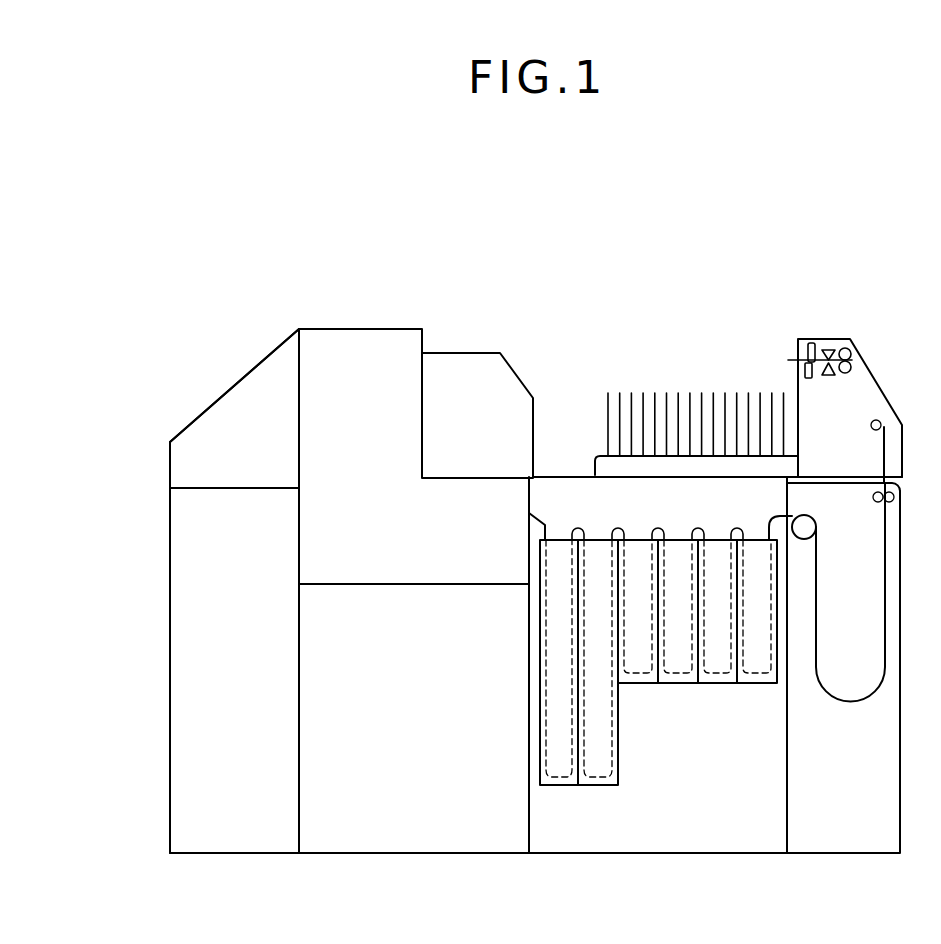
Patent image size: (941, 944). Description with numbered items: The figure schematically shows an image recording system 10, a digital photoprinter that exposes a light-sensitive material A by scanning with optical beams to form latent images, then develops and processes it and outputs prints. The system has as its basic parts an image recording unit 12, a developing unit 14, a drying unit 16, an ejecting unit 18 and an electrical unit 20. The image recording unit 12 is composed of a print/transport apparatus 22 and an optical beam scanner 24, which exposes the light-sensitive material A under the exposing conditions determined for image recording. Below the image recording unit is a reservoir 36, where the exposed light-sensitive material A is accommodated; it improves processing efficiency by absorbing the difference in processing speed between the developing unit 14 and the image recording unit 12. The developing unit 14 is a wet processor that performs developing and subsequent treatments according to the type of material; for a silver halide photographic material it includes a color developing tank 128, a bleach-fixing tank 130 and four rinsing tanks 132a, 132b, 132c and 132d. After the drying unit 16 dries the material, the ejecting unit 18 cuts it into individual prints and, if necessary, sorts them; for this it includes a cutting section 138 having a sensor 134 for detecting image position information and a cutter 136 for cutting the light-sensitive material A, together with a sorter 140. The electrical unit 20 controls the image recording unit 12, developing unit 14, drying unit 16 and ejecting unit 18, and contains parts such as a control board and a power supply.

The image recording system 10 is at (562, 270).
The image recording unit 12 is at (185, 323).
The developing unit 14 is at (757, 832).
The drying unit 16 is at (857, 822).
The ejecting unit 18 is at (730, 288).
The electrical unit 20 is at (176, 619).
The print/transport apparatus 22 is at (357, 342).
The optical beam scanner 24 is at (198, 430).
The reservoir 36 is at (427, 716).
The color developing tank 128 is at (563, 786).
The bleach-fixing tank 130 is at (618, 780).
The rinsing tank 132a is at (646, 683).
The rinsing tank 132b is at (671, 541).
The rinsing tank 132c is at (728, 683).
The rinsing tank 132d is at (757, 547).
The sensor 134 is at (826, 378).
The cutter 136 is at (812, 343).
The cutting section 138 is at (918, 385).
The sorter 140 is at (687, 383).
The light-sensitive material A is at (820, 606).